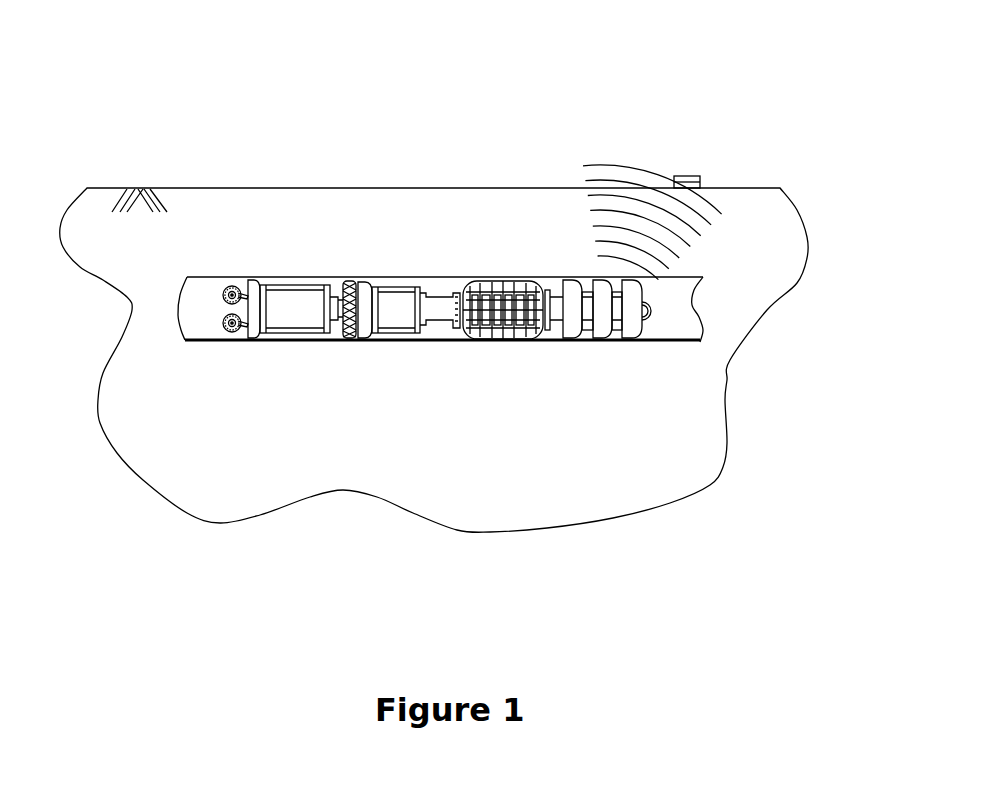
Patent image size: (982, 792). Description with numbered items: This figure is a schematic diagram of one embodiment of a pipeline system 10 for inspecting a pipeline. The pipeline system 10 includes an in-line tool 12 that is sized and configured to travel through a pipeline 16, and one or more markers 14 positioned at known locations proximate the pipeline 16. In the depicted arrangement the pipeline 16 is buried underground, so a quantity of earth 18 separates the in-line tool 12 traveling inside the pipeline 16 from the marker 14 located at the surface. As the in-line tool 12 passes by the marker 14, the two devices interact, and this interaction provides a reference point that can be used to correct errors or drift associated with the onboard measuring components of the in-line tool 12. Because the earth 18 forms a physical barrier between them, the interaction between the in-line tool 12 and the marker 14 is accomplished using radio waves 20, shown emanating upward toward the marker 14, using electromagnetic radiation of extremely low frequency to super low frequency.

The pipeline system 10 is at (672, 92).
The in-line tool 12 is at (660, 327).
The marker 14 is at (692, 175).
The pipeline 16 is at (557, 342).
The earth 18 is at (228, 212).
The radio waves 20 is at (587, 198).